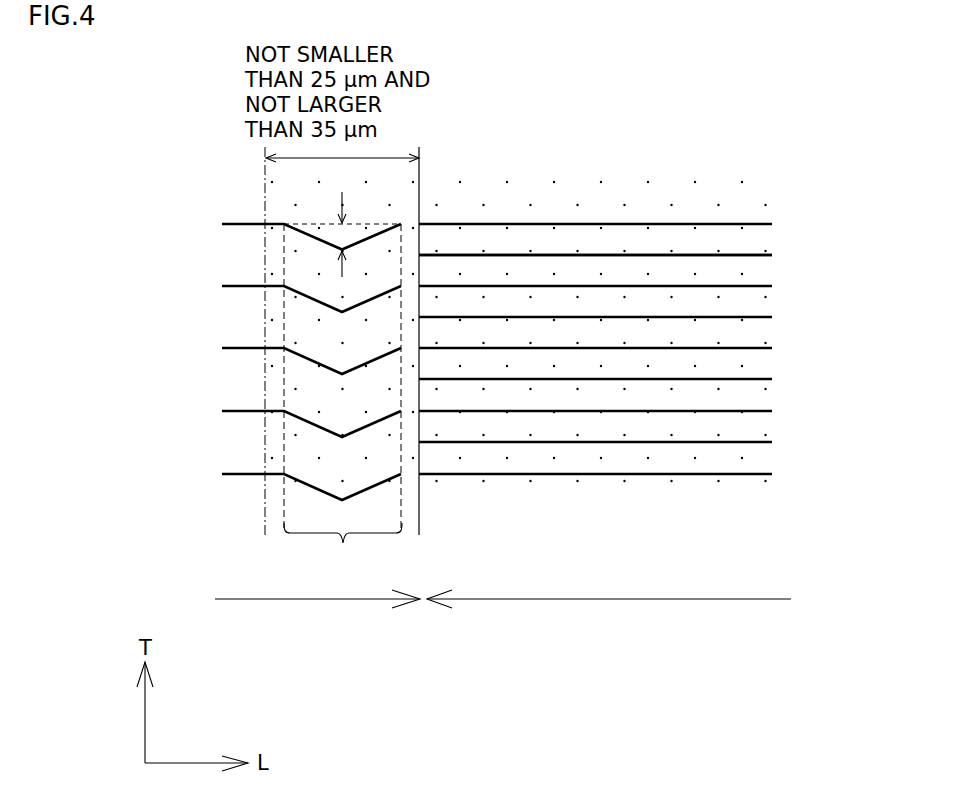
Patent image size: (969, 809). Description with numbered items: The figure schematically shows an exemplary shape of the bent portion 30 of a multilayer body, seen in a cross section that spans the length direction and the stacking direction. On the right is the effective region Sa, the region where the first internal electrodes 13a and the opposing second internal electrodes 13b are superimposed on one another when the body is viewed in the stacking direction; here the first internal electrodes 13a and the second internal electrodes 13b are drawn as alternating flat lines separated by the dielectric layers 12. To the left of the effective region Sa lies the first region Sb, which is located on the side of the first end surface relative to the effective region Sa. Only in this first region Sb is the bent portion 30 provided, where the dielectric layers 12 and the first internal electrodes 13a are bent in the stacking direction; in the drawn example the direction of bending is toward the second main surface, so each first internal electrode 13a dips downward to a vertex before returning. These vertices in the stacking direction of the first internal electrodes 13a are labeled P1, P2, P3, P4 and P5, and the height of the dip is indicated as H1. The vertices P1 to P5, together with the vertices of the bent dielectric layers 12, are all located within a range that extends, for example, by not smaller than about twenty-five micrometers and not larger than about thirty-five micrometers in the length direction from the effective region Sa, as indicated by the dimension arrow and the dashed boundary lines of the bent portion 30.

The dielectric layer 12 is at (512, 243).
The first internal electrode 13a is at (475, 222).
The second internal electrode 13b is at (587, 255).
The bent portion 30 is at (343, 549).
The height of bent portion H1 is at (342, 238).
The vertex P1 is at (340, 501).
The vertex P2 is at (340, 438).
The vertex P3 is at (340, 375).
The vertex P4 is at (340, 313).
The vertex P5 is at (340, 251).
The first region Sb is at (317, 611).
The effective region Sa is at (609, 611).